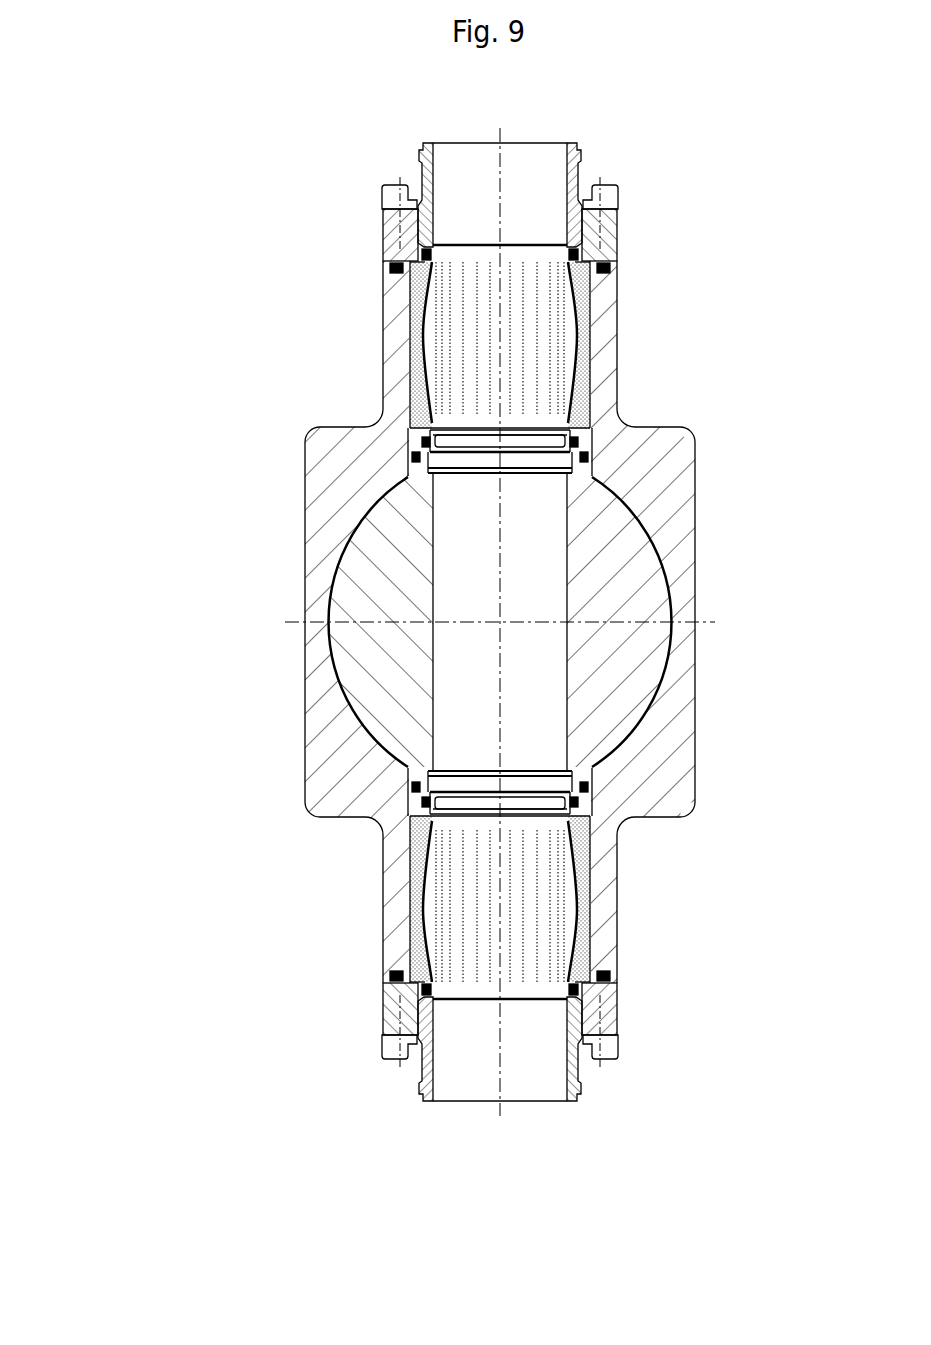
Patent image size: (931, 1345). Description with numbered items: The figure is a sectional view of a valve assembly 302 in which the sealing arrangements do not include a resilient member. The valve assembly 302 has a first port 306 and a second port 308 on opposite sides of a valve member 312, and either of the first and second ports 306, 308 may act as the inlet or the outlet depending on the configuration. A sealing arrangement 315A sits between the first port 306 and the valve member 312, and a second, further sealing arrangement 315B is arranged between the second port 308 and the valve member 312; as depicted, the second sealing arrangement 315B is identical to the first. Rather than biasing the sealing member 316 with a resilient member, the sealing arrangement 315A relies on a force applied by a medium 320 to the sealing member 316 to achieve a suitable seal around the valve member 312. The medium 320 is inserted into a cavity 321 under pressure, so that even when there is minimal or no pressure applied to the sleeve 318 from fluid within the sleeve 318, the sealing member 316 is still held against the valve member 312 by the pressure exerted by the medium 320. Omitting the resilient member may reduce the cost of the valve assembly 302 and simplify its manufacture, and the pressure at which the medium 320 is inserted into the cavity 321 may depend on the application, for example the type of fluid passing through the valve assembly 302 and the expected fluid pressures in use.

The valve assembly 302 is at (220, 180).
The first port 306 is at (572, 143).
The second port 308 is at (423, 1083).
The valve member 312 is at (370, 570).
The sealing arrangement 315A is at (398, 419).
The second sealing arrangement 315B is at (398, 846).
The sealing member 316 is at (588, 443).
The sleeve 318 is at (575, 363).
The medium 320 is at (587, 320).
The cavity 321 is at (403, 273).